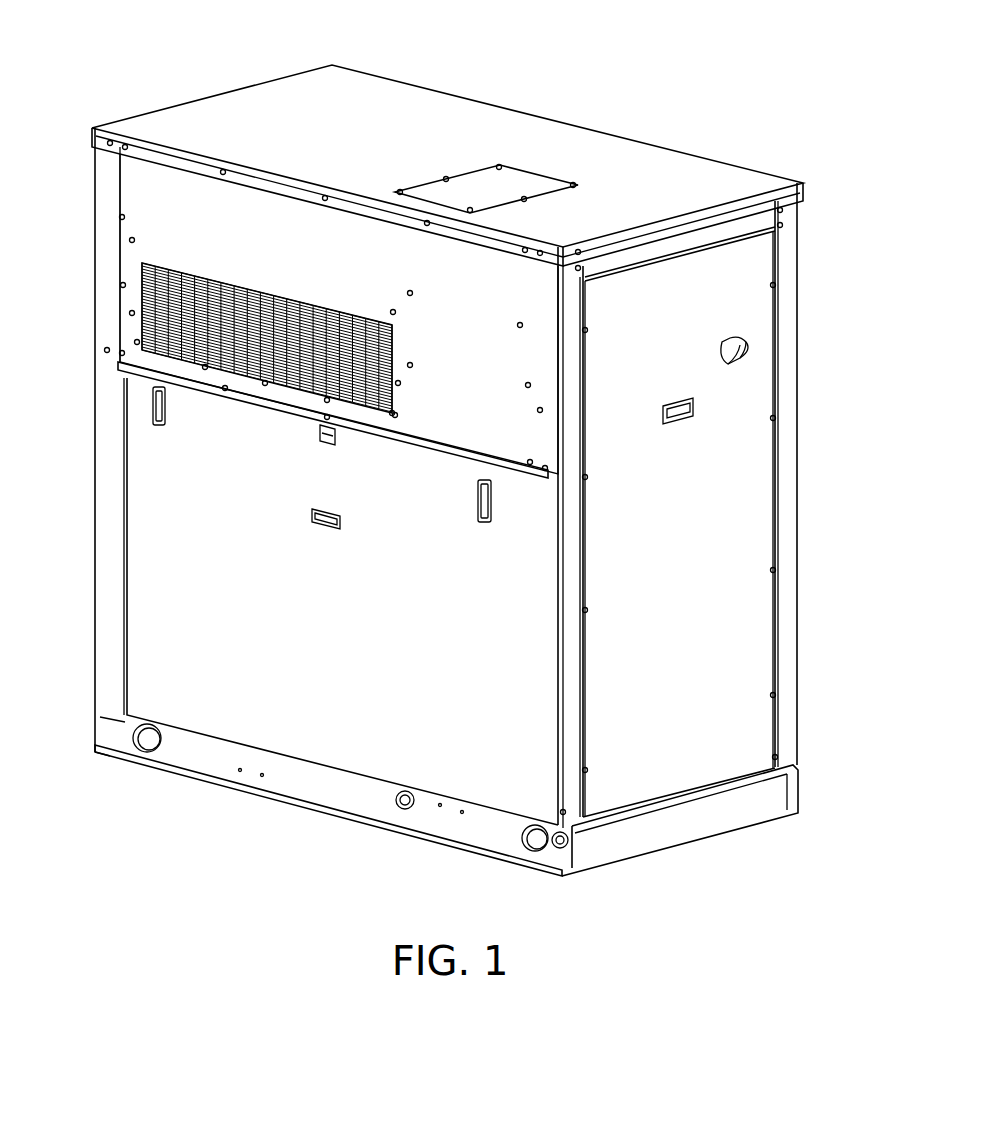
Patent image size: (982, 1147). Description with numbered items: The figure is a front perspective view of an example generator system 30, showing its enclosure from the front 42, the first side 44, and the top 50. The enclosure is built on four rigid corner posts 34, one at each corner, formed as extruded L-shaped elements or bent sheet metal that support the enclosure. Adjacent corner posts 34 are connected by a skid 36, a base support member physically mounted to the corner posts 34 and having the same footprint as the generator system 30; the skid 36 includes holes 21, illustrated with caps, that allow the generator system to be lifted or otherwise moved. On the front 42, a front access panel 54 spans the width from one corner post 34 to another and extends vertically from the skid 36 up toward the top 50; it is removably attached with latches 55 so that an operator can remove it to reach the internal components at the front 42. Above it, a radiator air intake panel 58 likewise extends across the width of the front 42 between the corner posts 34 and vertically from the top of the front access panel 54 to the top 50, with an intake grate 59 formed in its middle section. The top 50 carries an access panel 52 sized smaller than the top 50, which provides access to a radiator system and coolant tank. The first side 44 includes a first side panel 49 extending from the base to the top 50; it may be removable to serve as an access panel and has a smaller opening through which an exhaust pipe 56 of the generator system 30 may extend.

The generator system 30 is at (270, 46).
The holes 21 is at (145, 738).
The corner posts 34 is at (105, 178).
The skid 36 is at (228, 757).
The front 42 is at (185, 590).
The first side 44 is at (727, 276).
The first side panel 49 is at (720, 445).
The top 50 is at (563, 142).
The access panel 52 is at (495, 166).
The front access panel 54 is at (332, 735).
The latches 55 is at (152, 415).
The exhaust pipe 56 is at (742, 358).
The radiator air intake panel 58 is at (140, 226).
The intake grate 59 is at (135, 302).